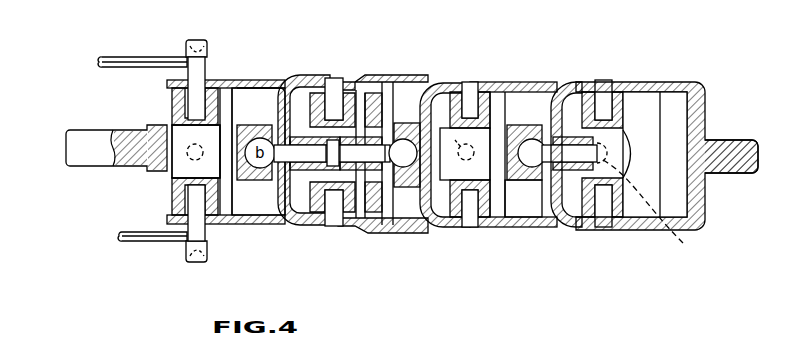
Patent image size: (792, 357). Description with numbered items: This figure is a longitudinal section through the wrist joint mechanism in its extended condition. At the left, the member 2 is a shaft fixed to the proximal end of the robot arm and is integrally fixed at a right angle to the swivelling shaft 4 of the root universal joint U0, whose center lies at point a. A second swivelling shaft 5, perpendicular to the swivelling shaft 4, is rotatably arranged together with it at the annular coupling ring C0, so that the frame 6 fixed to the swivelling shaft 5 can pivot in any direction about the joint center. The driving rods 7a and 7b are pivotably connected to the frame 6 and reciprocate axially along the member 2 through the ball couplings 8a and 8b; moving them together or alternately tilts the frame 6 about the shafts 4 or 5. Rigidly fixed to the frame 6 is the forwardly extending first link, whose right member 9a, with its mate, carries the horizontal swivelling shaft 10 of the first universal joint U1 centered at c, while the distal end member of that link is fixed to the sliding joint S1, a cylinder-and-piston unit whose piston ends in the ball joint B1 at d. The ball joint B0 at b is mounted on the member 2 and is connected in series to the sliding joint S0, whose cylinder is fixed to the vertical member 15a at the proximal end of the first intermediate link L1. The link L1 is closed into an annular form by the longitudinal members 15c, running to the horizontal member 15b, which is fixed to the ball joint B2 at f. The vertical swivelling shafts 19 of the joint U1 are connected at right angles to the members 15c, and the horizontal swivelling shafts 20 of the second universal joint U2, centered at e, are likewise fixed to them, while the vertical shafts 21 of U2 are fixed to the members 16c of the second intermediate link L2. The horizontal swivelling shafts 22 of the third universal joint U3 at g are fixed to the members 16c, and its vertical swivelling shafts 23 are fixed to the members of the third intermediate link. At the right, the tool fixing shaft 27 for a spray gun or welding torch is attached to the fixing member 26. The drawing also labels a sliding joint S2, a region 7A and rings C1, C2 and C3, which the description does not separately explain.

The member 2 is at (85, 130).
The swivelling shaft 4 is at (187, 155).
The swivelling shaft 5 is at (183, 60).
The frame 6 is at (182, 245).
The driving rod 7a is at (120, 236).
The driving rod 7b is at (121, 57).
The arm support 7A is at (168, 172).
The ball coupling 8a is at (200, 259).
The ball coupling 8b is at (197, 40).
The member of first link 9a is at (292, 232).
The horizontal swivelling shaft 10 is at (326, 228).
The vertical member 15a is at (294, 95).
The horizontal member 15b is at (530, 90).
The longitudinal member 15c is at (446, 230).
The member of second intermediate link 16c is at (586, 230).
The vertical swivelling shaft 19 is at (338, 77).
The horizontal swivelling shaft 20 is at (428, 86).
The vertical swivelling shaft 21 is at (463, 84).
The horizontal swivelling shaft 22 is at (680, 243).
The vertical swivelling shaft 23 is at (603, 90).
The fixing member 26 is at (706, 92).
The tool fixing shaft 27 is at (738, 146).
The coupling ring C0 is at (170, 102).
The housing section 1 C1 is at (360, 80).
The housing section 2 C2 is at (500, 90).
The housing section 3 C3 is at (638, 120).
The universal joint U0 is at (233, 92).
The first universal joint U1 is at (343, 232).
The second universal joint U2 is at (507, 95).
The third universal joint U3 is at (652, 108).
The ball joint B0 is at (258, 108).
The ball joint B1 is at (412, 232).
The ball joint B2 is at (538, 232).
The sliding joint S0 is at (318, 102).
The sliding joint S1 is at (386, 226).
The slide joint g S2 is at (600, 166).
The first intermediate link L1 is at (365, 235).
The second intermediate link L2 is at (492, 232).